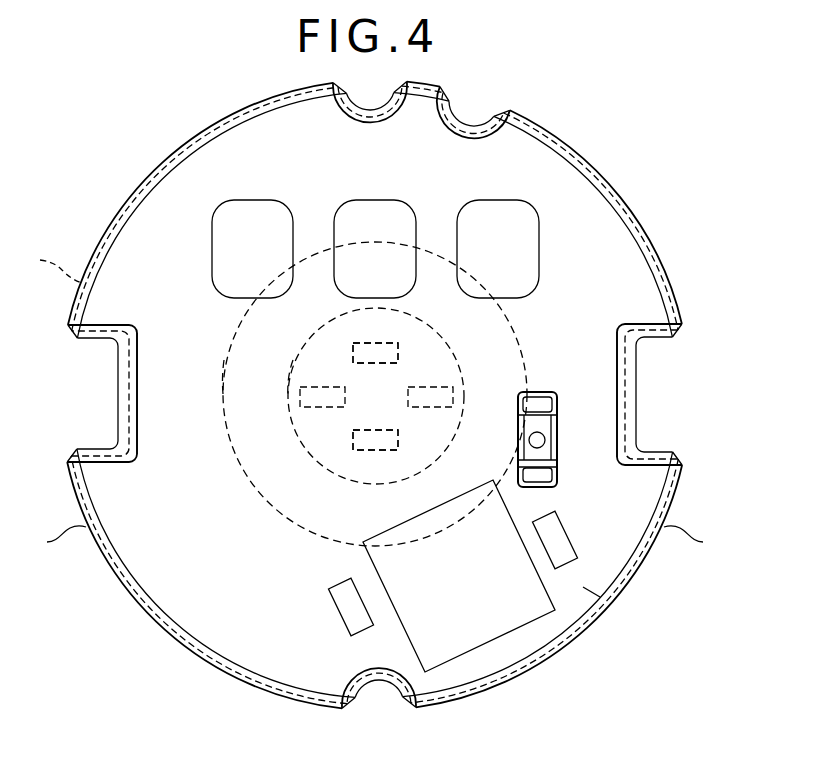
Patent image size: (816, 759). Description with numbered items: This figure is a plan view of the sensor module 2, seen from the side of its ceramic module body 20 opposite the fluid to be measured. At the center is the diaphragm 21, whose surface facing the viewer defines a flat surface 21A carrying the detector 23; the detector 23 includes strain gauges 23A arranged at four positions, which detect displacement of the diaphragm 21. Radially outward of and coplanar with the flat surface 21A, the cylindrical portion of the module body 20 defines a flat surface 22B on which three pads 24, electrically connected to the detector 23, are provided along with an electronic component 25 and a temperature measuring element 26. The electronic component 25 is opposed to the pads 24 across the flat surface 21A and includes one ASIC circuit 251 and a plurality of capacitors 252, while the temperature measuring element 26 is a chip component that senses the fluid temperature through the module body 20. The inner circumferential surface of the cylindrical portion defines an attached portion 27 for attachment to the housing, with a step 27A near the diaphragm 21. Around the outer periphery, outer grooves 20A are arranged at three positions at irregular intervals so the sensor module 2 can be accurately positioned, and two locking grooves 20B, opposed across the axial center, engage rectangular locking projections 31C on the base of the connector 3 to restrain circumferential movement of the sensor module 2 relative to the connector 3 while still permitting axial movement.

The sensor module 2 is at (629, 94).
The connector 3 is at (670, 276).
The module body 20 is at (153, 223).
The outer groove 20A is at (473, 120).
The locking groove 20B is at (108, 449).
The diaphragm 21 is at (413, 337).
The flat surface 21A is at (318, 368).
The flat surface 22B is at (583, 587).
The detector 23 is at (428, 407).
The strain gauge 23A is at (428, 387).
The pad 24 is at (252, 217).
The electronic component 25 is at (451, 589).
The ASIC circuit 251 is at (505, 623).
The capacitor 252 is at (558, 533).
The temperature measuring element 26 is at (546, 441).
The attached portion 27 is at (232, 432).
The step 27A is at (228, 370).
The locking projection 31C is at (124, 358).